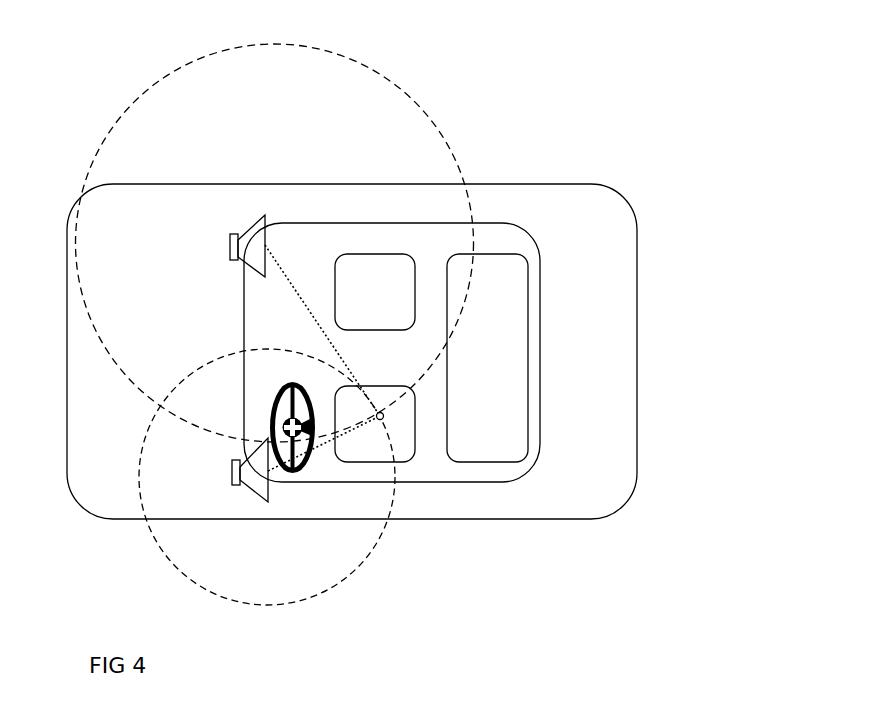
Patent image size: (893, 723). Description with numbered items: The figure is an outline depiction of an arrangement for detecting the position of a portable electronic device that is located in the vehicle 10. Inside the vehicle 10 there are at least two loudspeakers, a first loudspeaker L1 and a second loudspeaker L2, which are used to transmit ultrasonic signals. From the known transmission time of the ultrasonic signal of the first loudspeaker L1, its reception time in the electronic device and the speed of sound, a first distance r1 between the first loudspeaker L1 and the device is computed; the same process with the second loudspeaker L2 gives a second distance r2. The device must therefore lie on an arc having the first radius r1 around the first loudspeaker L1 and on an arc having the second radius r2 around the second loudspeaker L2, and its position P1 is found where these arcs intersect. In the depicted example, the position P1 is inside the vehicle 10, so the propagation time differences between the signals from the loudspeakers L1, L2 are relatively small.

The vehicle 10 is at (550, 184).
The first loudspeaker L1 is at (249, 472).
The second loudspeaker L2 is at (245, 240).
The position P1 is at (392, 420).
The first distance r1 is at (267, 477).
The second distance r2 is at (275, 243).